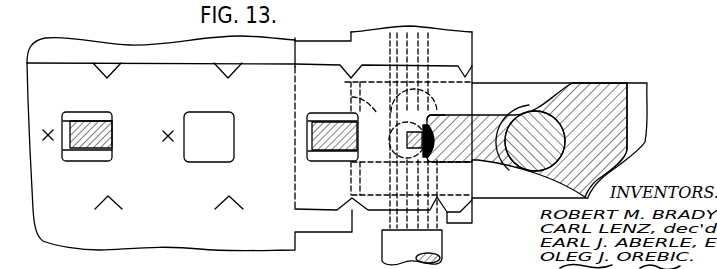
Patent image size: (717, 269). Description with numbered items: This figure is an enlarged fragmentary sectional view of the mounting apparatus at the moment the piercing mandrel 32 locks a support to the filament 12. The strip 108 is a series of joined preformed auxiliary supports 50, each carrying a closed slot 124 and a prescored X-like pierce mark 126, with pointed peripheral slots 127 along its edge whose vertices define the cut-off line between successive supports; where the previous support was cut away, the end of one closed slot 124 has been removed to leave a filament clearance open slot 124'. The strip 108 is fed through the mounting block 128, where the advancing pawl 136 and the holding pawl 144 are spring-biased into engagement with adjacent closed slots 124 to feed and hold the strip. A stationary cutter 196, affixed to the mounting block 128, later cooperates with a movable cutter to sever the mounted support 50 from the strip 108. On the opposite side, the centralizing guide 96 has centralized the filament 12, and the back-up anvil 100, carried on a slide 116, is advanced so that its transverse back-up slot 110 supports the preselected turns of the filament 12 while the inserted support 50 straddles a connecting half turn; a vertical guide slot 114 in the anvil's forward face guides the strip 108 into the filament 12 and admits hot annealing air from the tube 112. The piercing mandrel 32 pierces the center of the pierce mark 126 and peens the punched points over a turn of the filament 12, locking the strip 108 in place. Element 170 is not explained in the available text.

The filament 12 is at (471, 165).
The piercing mandrel 32 is at (405, 140).
The auxiliary support 50 is at (452, 112).
The centralizing guide 96 is at (468, 31).
The back-up anvil 100 is at (592, 91).
The strip 108 is at (82, 73).
The back-up slot 110 is at (367, 104).
The tube 112 is at (387, 243).
The vertical guide slot 114 is at (553, 88).
The slide 116 is at (634, 95).
The closed slot 124 is at (184, 126).
The filament clearance open slot 124' is at (470, 89).
The pierce mark 126 is at (170, 142).
The pointed peripheral slots 127 is at (213, 68).
The mounting block 128 is at (160, 50).
The advancing pawl 136 is at (332, 146).
The holding pawl 144 is at (113, 142).
The ball 170 is at (523, 92).
The stationary cutter 196 is at (318, 48).